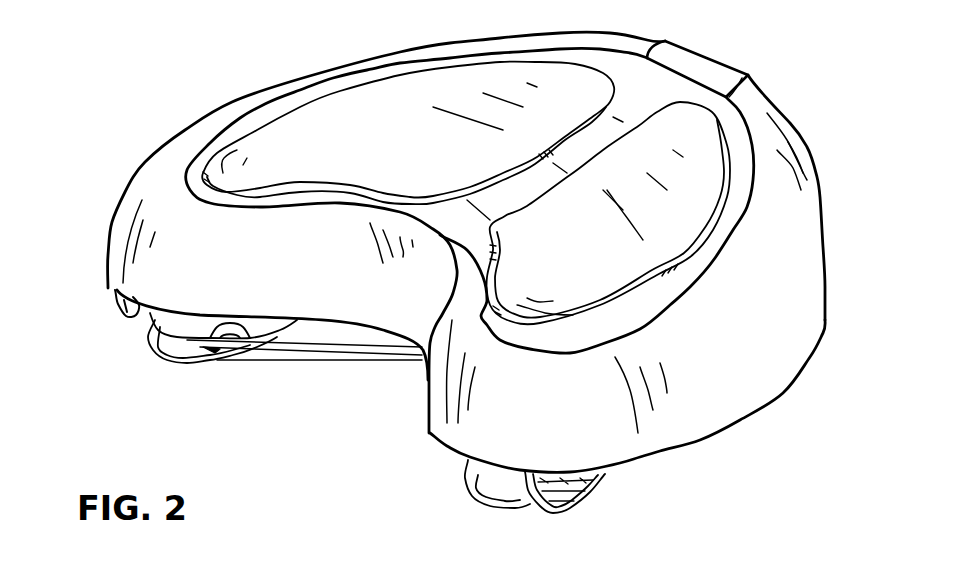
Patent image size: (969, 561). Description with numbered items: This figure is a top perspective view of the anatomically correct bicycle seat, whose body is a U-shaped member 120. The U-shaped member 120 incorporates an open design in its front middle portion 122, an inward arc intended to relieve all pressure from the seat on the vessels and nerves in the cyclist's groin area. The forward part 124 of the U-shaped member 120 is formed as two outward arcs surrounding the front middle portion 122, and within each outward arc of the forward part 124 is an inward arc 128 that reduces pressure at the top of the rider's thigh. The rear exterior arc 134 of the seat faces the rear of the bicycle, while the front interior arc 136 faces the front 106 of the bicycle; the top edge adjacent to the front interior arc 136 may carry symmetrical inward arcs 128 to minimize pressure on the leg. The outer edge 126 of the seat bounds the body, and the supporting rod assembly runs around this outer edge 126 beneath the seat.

The U-shaped member 120 is at (757, 362).
The rear exterior arc 134 is at (760, 108).
The inward arc 128 is at (173, 243).
The outer edge 126 is at (663, 427).
The front 106 is at (427, 436).
The front middle portion 122 is at (390, 288).
The front interior arc 136 is at (340, 293).
The forward part 124 is at (112, 403).